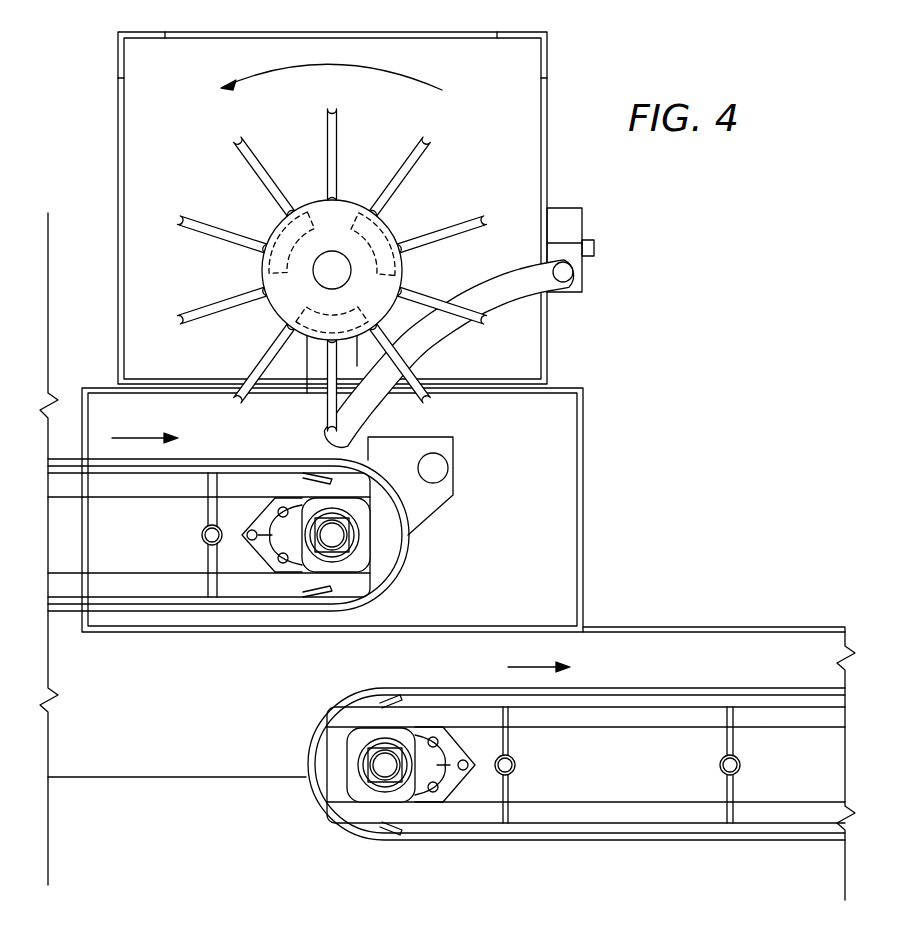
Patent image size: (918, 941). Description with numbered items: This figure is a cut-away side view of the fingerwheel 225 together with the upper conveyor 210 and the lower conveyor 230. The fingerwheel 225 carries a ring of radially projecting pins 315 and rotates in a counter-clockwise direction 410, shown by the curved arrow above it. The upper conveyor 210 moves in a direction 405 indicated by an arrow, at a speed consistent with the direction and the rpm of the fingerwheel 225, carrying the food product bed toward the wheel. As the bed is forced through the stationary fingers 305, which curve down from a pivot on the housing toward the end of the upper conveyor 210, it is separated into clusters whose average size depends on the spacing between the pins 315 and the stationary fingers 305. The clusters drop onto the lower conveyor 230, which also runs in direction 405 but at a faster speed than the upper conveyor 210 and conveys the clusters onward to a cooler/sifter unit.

The counter-clockwise direction 410 is at (420, 79).
The pins 315 is at (240, 160).
The fingerwheel 225 is at (392, 231).
The stationary fingers 305 is at (512, 310).
The direction 405 is at (147, 436).
The upper conveyor 210 is at (407, 558).
The lower conveyor 230 is at (455, 841).